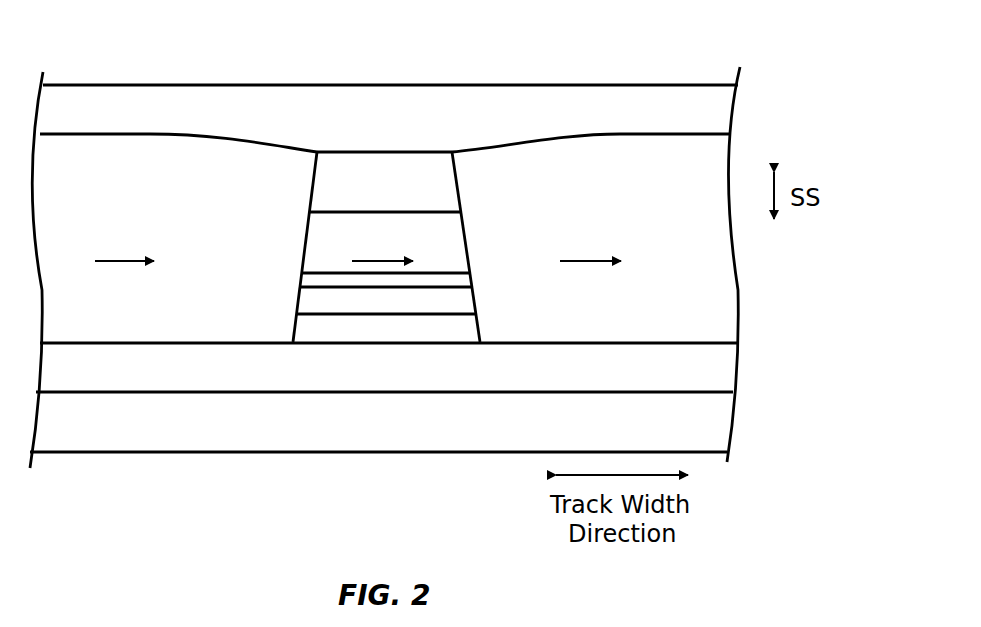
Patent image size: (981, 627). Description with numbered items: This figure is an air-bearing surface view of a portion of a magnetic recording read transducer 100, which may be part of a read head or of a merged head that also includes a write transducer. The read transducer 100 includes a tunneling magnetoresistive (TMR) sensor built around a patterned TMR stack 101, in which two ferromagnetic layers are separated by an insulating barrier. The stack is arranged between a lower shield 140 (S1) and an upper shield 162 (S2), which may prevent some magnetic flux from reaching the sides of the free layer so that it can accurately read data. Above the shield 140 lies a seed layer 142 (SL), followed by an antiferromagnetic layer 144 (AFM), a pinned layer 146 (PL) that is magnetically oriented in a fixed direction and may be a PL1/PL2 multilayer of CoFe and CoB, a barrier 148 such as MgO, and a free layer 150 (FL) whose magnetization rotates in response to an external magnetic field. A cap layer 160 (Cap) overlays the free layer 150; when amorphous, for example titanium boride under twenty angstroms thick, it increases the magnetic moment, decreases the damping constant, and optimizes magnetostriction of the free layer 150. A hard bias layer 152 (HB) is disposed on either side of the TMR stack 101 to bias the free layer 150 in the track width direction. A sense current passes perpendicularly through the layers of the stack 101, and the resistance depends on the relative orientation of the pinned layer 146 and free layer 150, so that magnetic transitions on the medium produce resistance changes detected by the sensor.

The read transducer 100 is at (645, 43).
The TMR stack 101 is at (322, 352).
The shield 140 is at (715, 410).
The seed layer 142 is at (715, 367).
The antiferromagnetic layer 144 is at (304, 331).
The pinned layer 146 is at (310, 302).
The barrier 148 is at (312, 280).
The free layer 150 is at (322, 229).
The hard bias layer 152 is at (715, 284).
The cap layer 160 is at (327, 183).
The shield 162 is at (723, 107).